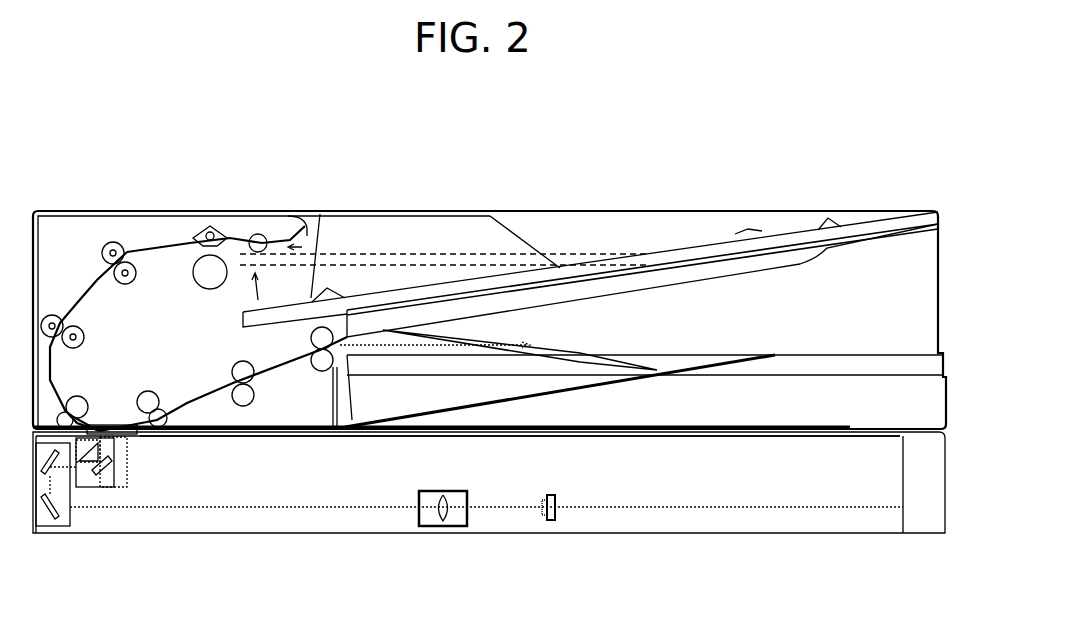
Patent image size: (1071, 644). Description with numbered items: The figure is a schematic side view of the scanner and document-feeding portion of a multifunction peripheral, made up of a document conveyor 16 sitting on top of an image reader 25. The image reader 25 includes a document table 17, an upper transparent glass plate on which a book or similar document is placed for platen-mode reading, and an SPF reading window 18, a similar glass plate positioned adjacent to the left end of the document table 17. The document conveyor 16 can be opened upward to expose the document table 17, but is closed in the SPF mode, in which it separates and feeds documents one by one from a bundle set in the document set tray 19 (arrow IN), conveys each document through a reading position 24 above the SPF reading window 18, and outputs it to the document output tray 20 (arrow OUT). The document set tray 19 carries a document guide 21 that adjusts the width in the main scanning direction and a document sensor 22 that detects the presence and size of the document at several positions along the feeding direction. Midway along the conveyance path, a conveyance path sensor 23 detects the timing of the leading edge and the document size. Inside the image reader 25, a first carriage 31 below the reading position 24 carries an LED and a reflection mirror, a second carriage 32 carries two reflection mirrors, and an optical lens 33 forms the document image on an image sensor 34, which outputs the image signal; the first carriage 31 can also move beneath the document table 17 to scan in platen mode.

The document conveyor 16 is at (615, 212).
The document table 17 is at (616, 435).
The SPF reading window 18 is at (113, 450).
The document set tray 19 is at (503, 272).
The document output tray 20 is at (663, 368).
The document guide 21 is at (455, 226).
The document sensor 22 is at (336, 292).
The conveyance path sensor 23 is at (210, 237).
The reading position 24 is at (106, 428).
The image reader 25 is at (785, 533).
The first carriage 31 is at (97, 487).
The second carriage 32 is at (68, 528).
The optical lens 33 is at (447, 526).
The image sensor 34 is at (551, 520).